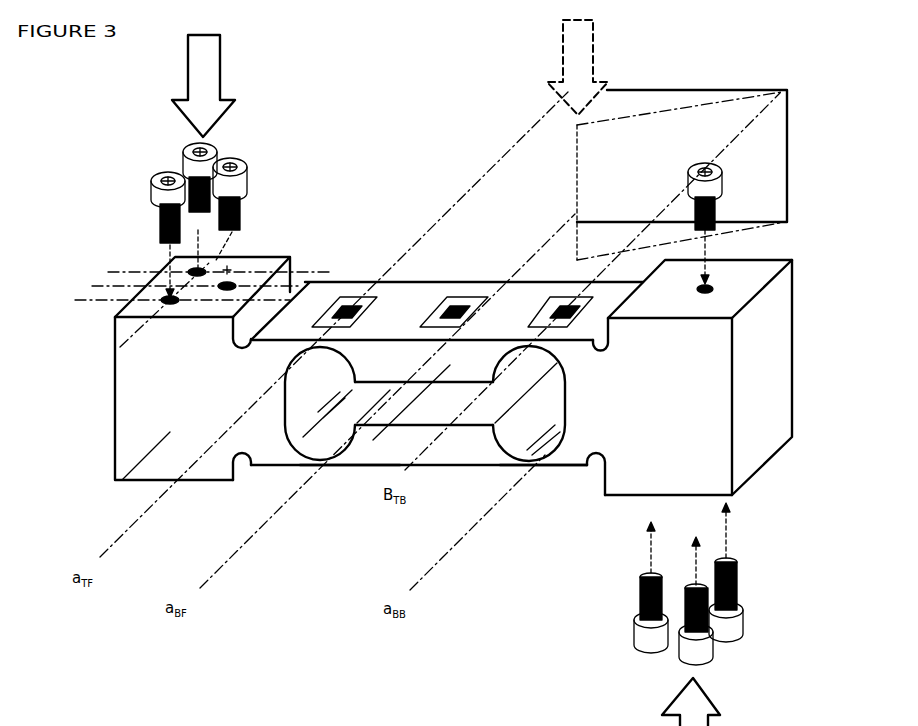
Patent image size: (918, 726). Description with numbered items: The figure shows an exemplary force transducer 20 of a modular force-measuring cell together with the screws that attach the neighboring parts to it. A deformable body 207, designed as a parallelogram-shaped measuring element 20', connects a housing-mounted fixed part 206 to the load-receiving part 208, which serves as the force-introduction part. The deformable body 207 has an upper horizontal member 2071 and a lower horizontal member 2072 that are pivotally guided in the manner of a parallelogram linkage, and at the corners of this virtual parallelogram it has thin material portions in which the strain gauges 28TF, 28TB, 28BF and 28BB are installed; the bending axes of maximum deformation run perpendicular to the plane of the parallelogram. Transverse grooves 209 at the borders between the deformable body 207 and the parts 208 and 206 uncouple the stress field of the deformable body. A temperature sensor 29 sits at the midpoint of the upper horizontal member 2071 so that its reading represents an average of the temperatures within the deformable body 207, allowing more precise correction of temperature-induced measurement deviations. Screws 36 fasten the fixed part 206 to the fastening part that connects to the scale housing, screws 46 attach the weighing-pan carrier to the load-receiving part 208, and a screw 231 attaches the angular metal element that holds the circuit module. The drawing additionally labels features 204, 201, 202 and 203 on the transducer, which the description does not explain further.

The force transducer 20 is at (422, 380).
The parallelogram-shaped measuring element 20' is at (667, 140).
The screws 46 is at (180, 150).
The screws 36 is at (708, 652).
The top mounting surface of first end block 204 is at (163, 293).
The load-receiving part 208 is at (115, 483).
The transverse grooves 209 is at (233, 347).
The deformable body 207 is at (387, 308).
The upper horizontal member 2071 is at (417, 313).
The horizontal member 2072 is at (432, 445).
The cutout opening 201 is at (537, 390).
The top surface of second end block 202 is at (718, 275).
The bottom surface of second end block 203 is at (733, 500).
The housing-mounted fixed part 206 is at (618, 493).
The screw 231 is at (697, 162).
The temperature sensor 29 is at (447, 297).
The strain gauge 28TF is at (340, 300).
The strain gauge 28TB is at (557, 298).
The strain gauge 28BF is at (343, 470).
The strain gauge 28BB is at (562, 472).